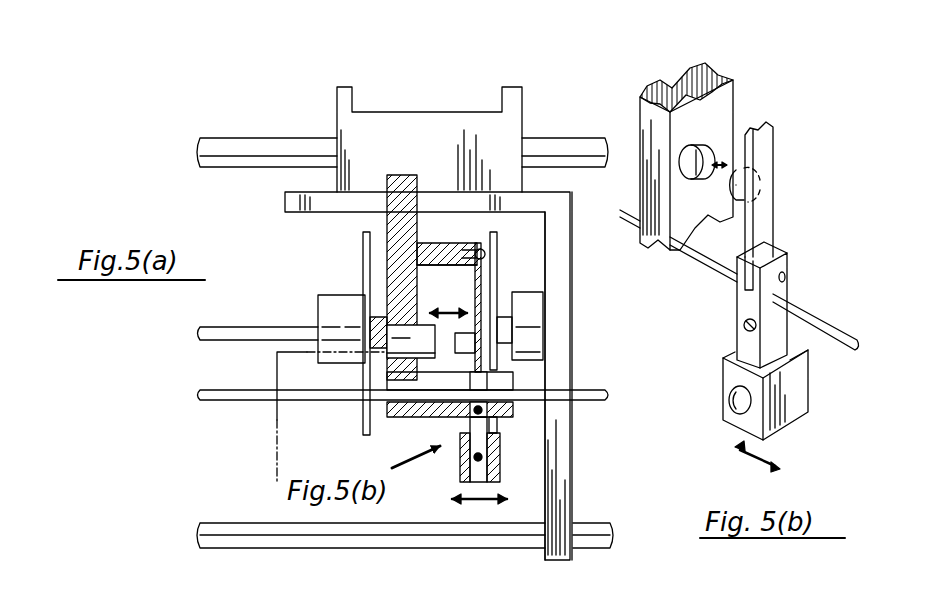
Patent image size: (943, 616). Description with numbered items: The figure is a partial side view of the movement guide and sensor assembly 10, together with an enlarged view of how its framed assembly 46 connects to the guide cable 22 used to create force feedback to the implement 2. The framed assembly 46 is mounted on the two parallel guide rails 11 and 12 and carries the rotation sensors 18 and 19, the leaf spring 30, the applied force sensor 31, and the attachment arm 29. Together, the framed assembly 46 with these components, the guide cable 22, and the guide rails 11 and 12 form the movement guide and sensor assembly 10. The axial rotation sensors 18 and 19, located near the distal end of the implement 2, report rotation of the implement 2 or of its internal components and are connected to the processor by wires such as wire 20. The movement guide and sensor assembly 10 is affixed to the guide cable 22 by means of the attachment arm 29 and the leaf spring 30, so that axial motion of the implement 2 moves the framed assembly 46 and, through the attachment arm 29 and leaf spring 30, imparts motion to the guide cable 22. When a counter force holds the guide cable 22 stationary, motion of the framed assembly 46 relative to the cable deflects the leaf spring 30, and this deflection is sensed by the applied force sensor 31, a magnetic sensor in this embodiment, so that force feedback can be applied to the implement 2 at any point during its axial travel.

In FIG. 5A, the implement 2 is at (273, 330).
In FIG. 5A, the movement guide and sensor assembly 10 is at (452, 137).
In FIG. 5A, the guide rail 11 is at (252, 148).
In FIG. 5A, the guide rail 12 is at (308, 538).
In FIG. 5A, the rotation sensor 18 is at (363, 270).
In FIG. 5A, the rotation sensor 19 is at (498, 270).
In FIG. 5A, the wire 20 is at (277, 375).
In FIG. 5A, the guide cable 22 is at (230, 400).
In FIG. 5B, the guide cable 22 is at (812, 323).
In FIG. 5A, the attachment arm 29 is at (402, 195).
In FIG. 5B, the attachment arm 29 is at (678, 80).
In FIG. 5A, the leaf spring 30 is at (480, 308).
In FIG. 5B, the leaf spring 30 is at (765, 225).
In FIG. 5A, the applied force sensor 31 is at (413, 340).
In FIG. 5B, the applied force sensor 31 is at (710, 140).
In FIG. 5A, the framed assembly 46 is at (557, 338).